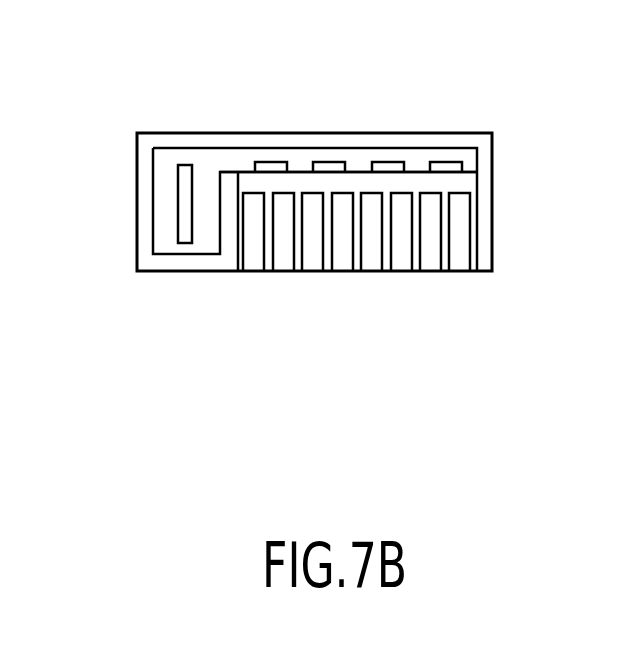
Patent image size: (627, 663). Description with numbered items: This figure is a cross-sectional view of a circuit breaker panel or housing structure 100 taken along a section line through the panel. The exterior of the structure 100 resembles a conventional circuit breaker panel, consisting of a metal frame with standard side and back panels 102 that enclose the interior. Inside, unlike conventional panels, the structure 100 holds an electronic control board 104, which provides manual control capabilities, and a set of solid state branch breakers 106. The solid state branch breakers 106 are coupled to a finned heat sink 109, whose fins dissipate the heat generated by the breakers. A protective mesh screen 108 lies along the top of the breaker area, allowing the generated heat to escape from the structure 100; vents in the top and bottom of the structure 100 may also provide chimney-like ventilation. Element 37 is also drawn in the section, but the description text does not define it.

The circuit breaker panel structure 100 is at (326, 186).
The side and back panels 102 is at (133, 125).
The conductive pattern 37 is at (237, 166).
The electronic control board 104 is at (180, 246).
The solid state branch breakers 106 is at (409, 163).
The protective mesh screen 108 is at (456, 177).
The finned heat sink 109 is at (480, 280).